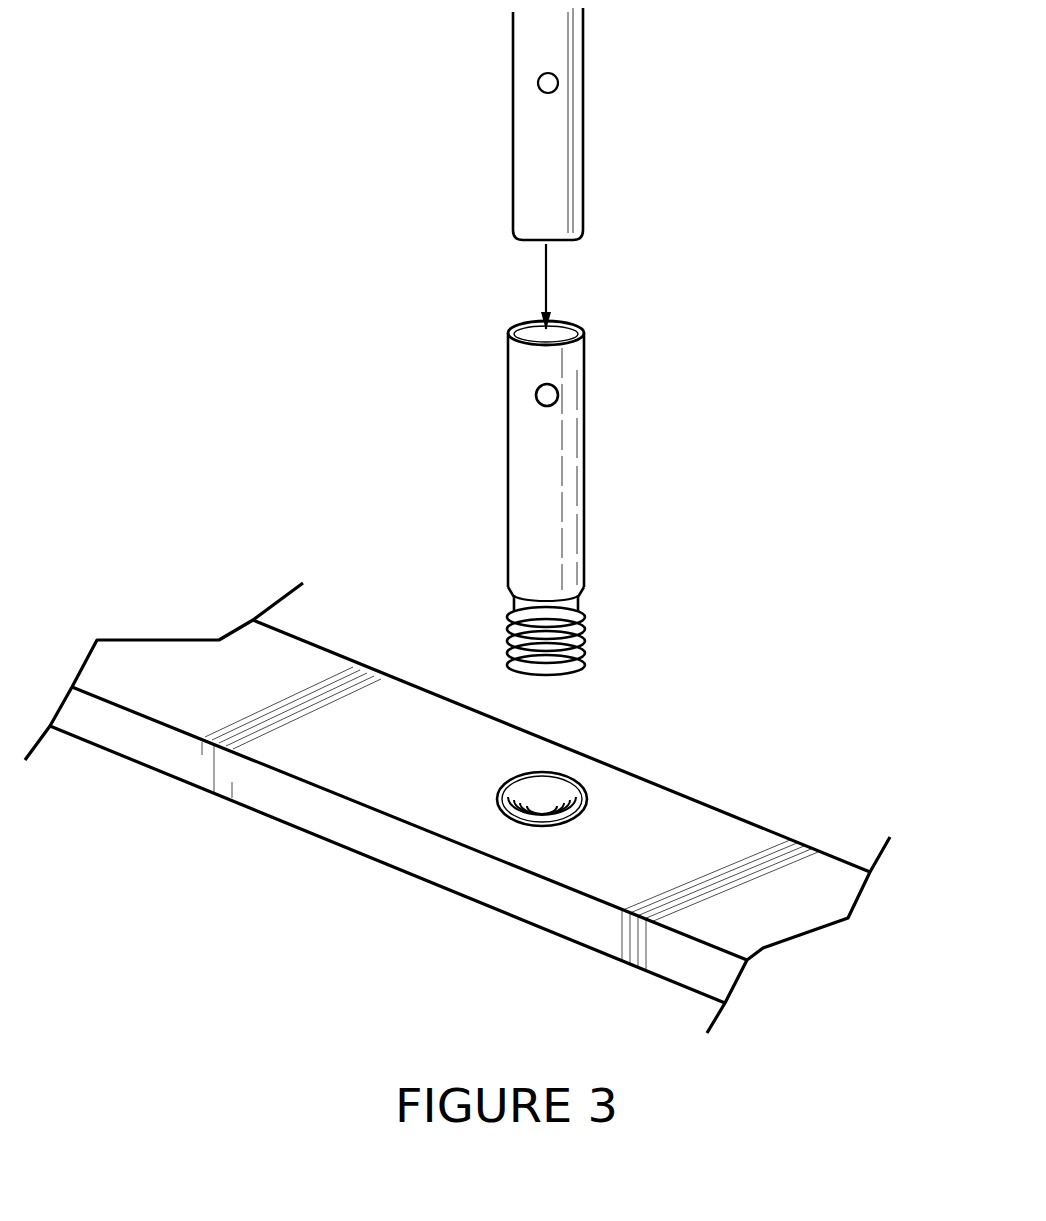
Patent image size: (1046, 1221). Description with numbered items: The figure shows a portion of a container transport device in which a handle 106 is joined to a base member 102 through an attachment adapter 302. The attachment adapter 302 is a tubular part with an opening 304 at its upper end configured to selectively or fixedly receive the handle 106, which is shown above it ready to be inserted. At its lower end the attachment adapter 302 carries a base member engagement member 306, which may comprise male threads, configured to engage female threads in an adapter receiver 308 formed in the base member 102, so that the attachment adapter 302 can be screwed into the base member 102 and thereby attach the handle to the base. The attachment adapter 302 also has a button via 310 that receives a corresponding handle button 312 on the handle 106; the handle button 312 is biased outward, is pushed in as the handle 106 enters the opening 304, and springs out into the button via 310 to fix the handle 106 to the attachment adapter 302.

The base member 102 is at (660, 810).
The handle 106 is at (690, 118).
The attachment adapter 302 is at (592, 433).
The opening 304 is at (583, 322).
The base member engagement member 306 is at (585, 628).
The adapter receiver 308 is at (515, 773).
The button via 310 is at (534, 388).
The handle button 312 is at (536, 83).